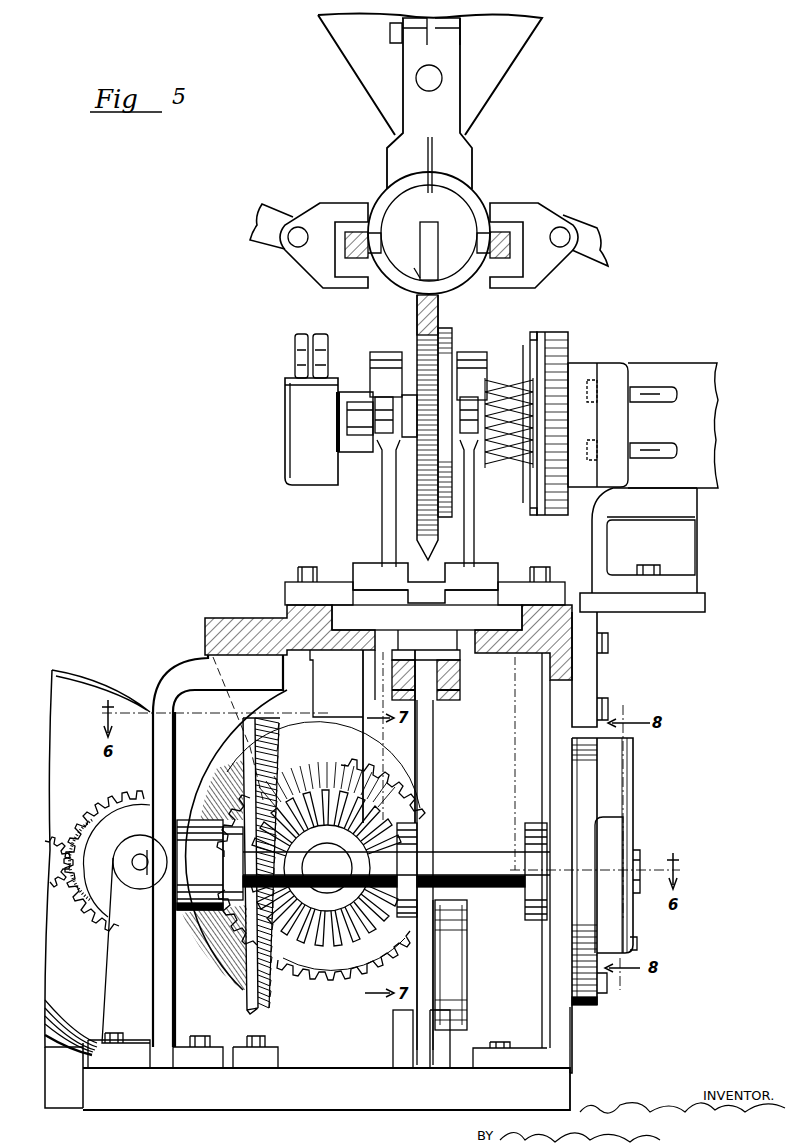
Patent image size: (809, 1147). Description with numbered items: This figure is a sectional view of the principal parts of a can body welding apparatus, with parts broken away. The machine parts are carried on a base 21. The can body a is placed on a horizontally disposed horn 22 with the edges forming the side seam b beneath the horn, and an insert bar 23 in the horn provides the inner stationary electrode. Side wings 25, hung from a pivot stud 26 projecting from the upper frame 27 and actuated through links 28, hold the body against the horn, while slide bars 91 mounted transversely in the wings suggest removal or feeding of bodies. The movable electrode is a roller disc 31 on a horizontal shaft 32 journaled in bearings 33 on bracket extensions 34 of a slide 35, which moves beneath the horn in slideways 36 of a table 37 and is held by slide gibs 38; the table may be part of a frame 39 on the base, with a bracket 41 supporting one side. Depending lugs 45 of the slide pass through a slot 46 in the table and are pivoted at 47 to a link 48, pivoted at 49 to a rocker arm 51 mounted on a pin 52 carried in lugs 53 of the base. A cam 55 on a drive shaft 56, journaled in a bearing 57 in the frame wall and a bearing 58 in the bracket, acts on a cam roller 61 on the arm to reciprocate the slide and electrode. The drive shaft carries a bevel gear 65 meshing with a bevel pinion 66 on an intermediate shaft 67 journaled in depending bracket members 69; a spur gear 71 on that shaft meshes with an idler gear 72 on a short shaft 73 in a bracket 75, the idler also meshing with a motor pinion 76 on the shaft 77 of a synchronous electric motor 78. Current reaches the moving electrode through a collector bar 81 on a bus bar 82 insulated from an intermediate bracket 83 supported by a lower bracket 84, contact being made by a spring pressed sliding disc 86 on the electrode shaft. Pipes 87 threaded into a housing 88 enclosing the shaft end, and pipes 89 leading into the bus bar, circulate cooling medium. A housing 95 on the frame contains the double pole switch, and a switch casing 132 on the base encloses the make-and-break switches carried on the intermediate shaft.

The base 21 is at (368, 1100).
The horn 22 is at (412, 203).
The insert bar 23 is at (438, 224).
The side wings 25 is at (388, 277).
The pivot stud 26 is at (434, 76).
The upper frame 27 is at (516, 60).
The links 28 is at (262, 238).
The roller disc 31 is at (440, 312).
The horizontal shaft 32 is at (358, 402).
The bearings 33 is at (383, 352).
The bracket extensions 34 is at (382, 524).
The slide 35 is at (490, 575).
The slideways 36 is at (295, 605).
The table 37 is at (280, 624).
The slide gibs 38 is at (297, 582).
The frame 39 is at (560, 782).
The bracket 41 is at (175, 690).
The depending lugs 45 is at (412, 642).
The slot 46 is at (456, 640).
The pivot connection 47 is at (460, 668).
The link 48 is at (460, 686).
The pivot connection 49 is at (453, 670).
The rocker arm 51 is at (423, 757).
The pin 52 is at (393, 1028).
The lugs 53 is at (440, 1066).
The cam 55 is at (458, 830).
The drive shaft 56 is at (497, 892).
The bearing 57 is at (530, 922).
The bearing 58 is at (210, 865).
The cam roller 61 is at (455, 848).
The bevel gear 65 is at (248, 998).
The bevel pinion 66 is at (326, 877).
The intermediate shaft 67 is at (327, 903).
The depending bracket members 69 is at (303, 823).
The spur gear 71 is at (327, 978).
The idler gear 72 is at (90, 920).
The short shaft 73 is at (138, 870).
The bracket 75 is at (126, 950).
The motor pinion 76 is at (58, 881).
The motor shaft 77 is at (85, 840).
The synchronous electric motor 78 is at (97, 889).
The collector bar 81 is at (600, 368).
The bus bar 82 is at (663, 368).
The intermediate bracket 83 is at (690, 518).
The lower bracket 84 is at (697, 604).
The spring pressed sliding disc 86 is at (567, 336).
The pipes 87 is at (295, 350).
The housing 88 is at (302, 425).
The pipes 89 is at (660, 404).
The slide bars 91 is at (355, 240).
The housing 95 is at (615, 806).
The switch casing 132 is at (293, 1033).
The can body a is at (434, 222).
The side seam b is at (410, 266).